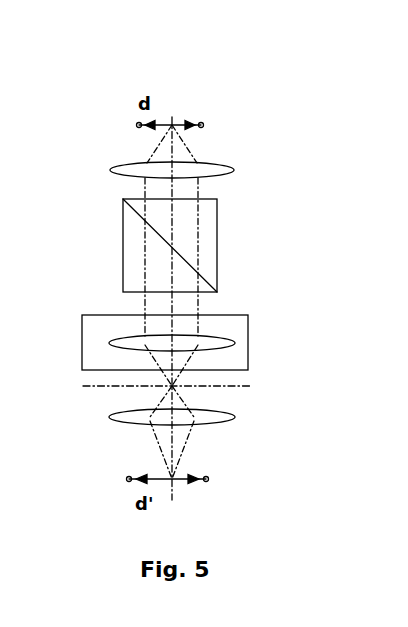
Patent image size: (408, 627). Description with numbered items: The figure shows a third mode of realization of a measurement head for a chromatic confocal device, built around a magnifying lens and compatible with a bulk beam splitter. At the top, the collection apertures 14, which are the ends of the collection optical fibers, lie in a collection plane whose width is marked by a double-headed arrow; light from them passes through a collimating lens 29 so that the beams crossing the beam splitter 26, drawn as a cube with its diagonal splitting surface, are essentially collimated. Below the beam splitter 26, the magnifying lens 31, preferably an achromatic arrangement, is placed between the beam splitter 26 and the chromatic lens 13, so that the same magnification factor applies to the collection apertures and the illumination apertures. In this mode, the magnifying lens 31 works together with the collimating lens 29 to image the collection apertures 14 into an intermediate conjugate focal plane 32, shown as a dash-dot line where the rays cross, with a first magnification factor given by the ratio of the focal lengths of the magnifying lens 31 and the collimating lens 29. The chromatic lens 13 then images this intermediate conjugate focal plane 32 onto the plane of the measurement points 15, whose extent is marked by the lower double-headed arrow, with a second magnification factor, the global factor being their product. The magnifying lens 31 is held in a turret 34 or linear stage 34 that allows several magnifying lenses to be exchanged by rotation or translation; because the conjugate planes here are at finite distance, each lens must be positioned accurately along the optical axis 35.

The chromatic lens 13 is at (109, 417).
The collection apertures 14 is at (204, 125).
The measurement points 15 is at (209, 479).
The beam splitter 26 is at (217, 245).
The collimating lens 29 is at (234, 170).
The magnifying lens 31 is at (108, 343).
The intermediate conjugate focal plane 32 is at (250, 386).
The turret 34 is at (248, 340).
The optical axis 35 is at (172, 278).